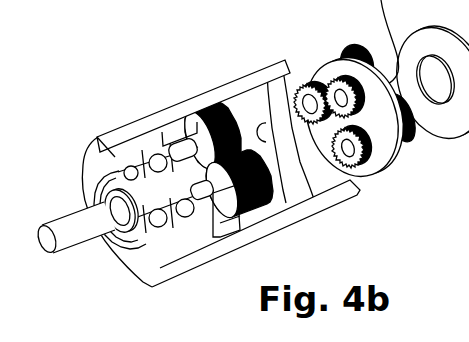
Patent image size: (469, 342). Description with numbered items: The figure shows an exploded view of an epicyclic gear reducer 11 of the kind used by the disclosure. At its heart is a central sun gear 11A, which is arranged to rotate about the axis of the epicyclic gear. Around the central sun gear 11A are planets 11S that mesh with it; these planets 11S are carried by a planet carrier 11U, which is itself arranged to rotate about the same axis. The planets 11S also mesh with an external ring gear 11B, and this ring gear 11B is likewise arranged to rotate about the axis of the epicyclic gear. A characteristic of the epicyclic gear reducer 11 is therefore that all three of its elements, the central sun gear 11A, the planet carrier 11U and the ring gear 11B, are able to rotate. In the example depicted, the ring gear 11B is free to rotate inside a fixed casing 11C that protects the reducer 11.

The epicyclic gear reducer 11 is at (128, 59).
The planets 11S is at (209, 116).
The planet carrier 11U is at (248, 135).
The central sun gear 11A is at (172, 184).
The external ring gear 11B is at (290, 188).
The fixed casing 11C is at (177, 251).